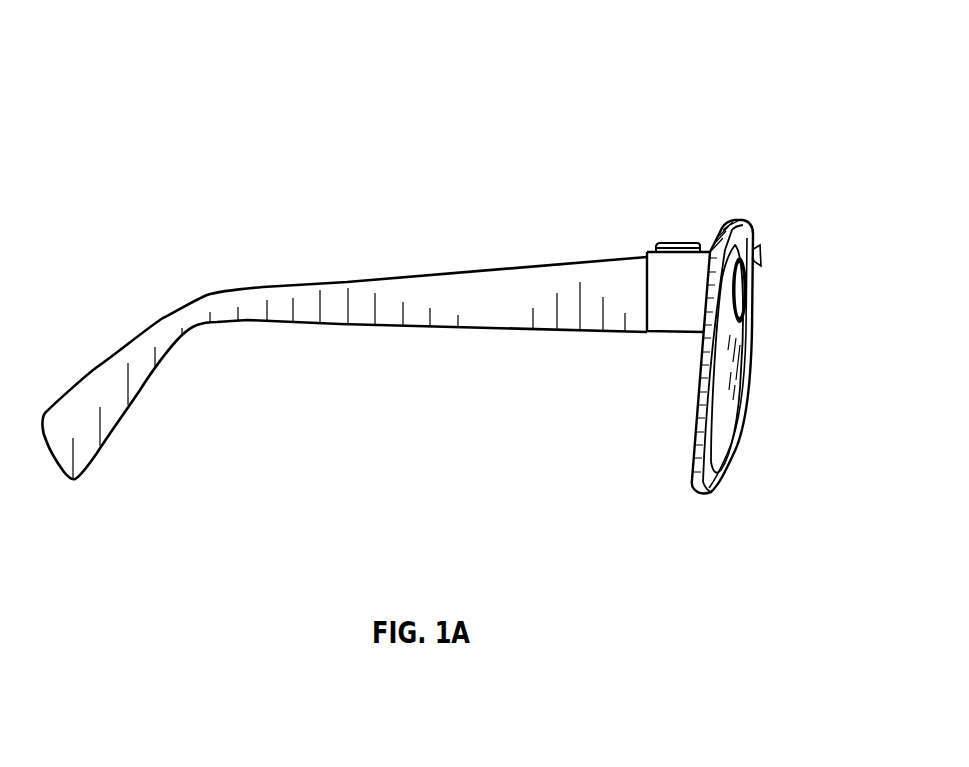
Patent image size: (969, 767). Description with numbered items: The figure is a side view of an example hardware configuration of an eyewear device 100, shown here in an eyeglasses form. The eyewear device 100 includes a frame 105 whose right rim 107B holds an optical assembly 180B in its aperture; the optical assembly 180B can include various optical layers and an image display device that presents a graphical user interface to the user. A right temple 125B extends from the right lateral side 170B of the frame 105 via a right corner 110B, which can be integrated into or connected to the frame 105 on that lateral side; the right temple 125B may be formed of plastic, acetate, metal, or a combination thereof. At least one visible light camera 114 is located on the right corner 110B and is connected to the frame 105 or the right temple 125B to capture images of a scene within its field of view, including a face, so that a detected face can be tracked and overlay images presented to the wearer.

The eyewear device 100 is at (243, 73).
The right temple 125B is at (247, 300).
The frame 105 is at (732, 223).
The right corner 110B is at (668, 325).
The right lateral side 170B is at (668, 248).
The right rim 107B is at (700, 492).
The optical assembly 180B is at (727, 414).
The visible light camera 114 is at (745, 292).